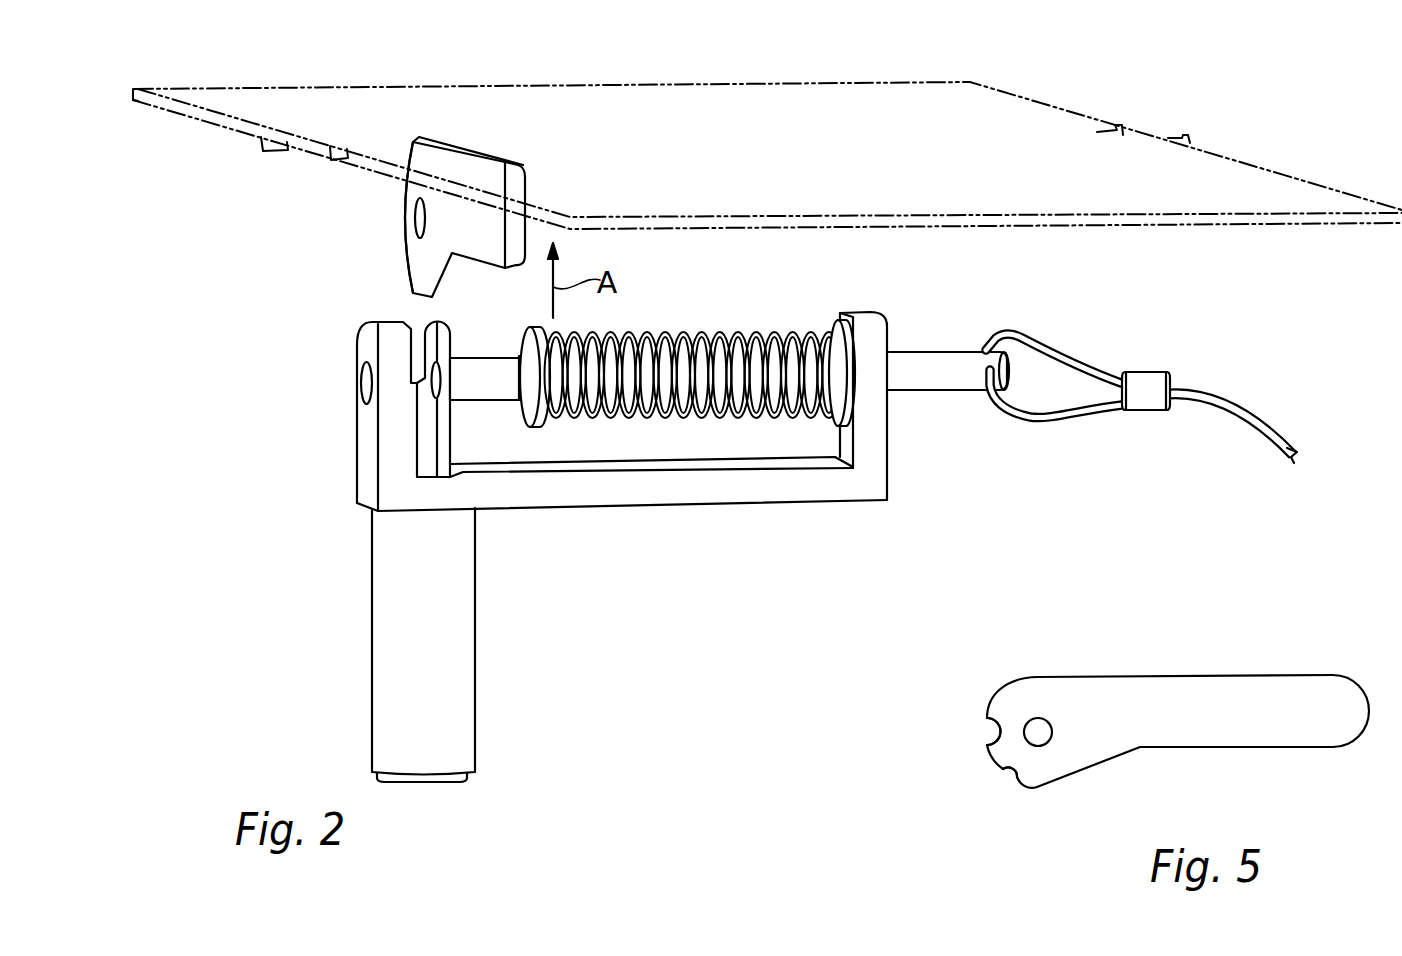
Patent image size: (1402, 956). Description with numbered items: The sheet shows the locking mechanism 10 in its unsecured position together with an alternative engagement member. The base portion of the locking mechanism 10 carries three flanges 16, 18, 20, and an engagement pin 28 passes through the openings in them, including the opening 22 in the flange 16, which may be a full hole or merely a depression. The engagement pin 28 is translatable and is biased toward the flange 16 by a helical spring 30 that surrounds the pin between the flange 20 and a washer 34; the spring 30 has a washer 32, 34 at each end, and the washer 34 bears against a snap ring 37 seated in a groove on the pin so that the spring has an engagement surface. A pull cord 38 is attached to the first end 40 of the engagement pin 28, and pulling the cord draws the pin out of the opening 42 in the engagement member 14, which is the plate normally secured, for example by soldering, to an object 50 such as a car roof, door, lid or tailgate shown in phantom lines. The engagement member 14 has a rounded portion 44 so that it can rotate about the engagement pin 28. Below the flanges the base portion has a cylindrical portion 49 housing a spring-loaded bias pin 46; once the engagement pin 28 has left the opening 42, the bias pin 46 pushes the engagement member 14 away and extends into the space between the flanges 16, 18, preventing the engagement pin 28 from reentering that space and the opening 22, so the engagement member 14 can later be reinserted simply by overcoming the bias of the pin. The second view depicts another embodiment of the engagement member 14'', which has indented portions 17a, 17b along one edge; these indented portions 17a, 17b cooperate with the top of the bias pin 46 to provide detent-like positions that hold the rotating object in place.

In FIG. 2, the locking mechanism 10 is at (649, 607).
In FIG. 2, the engagement member 14 is at (503, 215).
In FIG. 2, the flange 16 is at (385, 469).
In FIG. 2, the flange 18 is at (457, 440).
In FIG. 2, the flange 20 is at (877, 473).
In FIG. 2, the opening 22 is at (362, 385).
In FIG. 2, the engagement pin 28 is at (934, 350).
In FIG. 2, the spring 30 is at (727, 335).
In FIG. 2, the washer 32 is at (827, 325).
In FIG. 2, the washer 34 is at (523, 352).
In FIG. 2, the snap ring 37 is at (523, 352).
In FIG. 2, the pull cord 38 is at (1198, 410).
In FIG. 2, the first end 40 is at (964, 393).
In FIG. 2, the opening 42 is at (415, 216).
In FIG. 2, the rounded portion 44 is at (405, 158).
In FIG. 2, the bias pin 46 is at (425, 449).
In FIG. 2, the cylindrical portion 49 is at (458, 703).
In FIG. 2, the object 50 is at (160, 110).
In FIG. 5, the engagement member 14'' is at (1184, 683).
In FIG. 5, the indented portion 17a is at (1010, 779).
In FIG. 5, the indented portion 17b is at (985, 735).